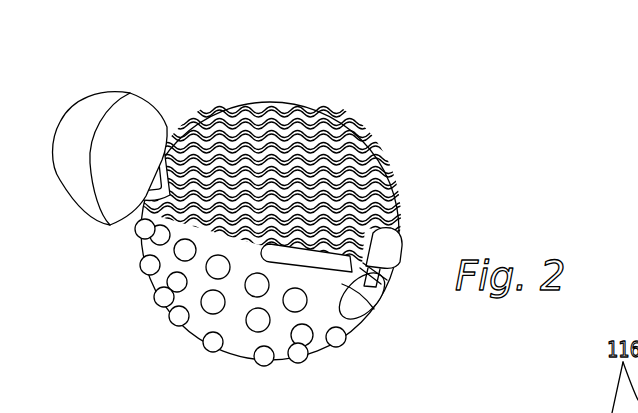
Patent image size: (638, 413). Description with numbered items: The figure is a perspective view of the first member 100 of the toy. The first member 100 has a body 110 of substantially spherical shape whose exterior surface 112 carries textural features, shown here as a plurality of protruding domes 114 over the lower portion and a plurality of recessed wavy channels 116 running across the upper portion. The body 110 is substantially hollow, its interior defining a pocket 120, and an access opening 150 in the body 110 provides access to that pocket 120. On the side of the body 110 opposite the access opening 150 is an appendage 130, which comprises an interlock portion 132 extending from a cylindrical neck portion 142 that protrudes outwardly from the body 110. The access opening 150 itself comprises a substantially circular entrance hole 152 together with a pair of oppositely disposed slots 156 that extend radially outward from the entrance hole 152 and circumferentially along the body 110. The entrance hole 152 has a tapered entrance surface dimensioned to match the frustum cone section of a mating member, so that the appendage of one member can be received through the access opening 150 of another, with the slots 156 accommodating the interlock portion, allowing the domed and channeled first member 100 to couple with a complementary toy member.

The first member 100 is at (372, 102).
The body 110 is at (372, 148).
The exterior surface 112 is at (303, 92).
The protruding domes 114 is at (218, 337).
The recessed wavy channels 116 is at (220, 127).
The pocket 120 is at (348, 300).
The appendage 130 is at (102, 90).
The interlock portion 132 is at (67, 190).
The cylindrical neck portion 142 is at (158, 147).
The access opening 150 is at (408, 253).
The entrance hole 152 is at (387, 283).
The slots 156 is at (313, 280).